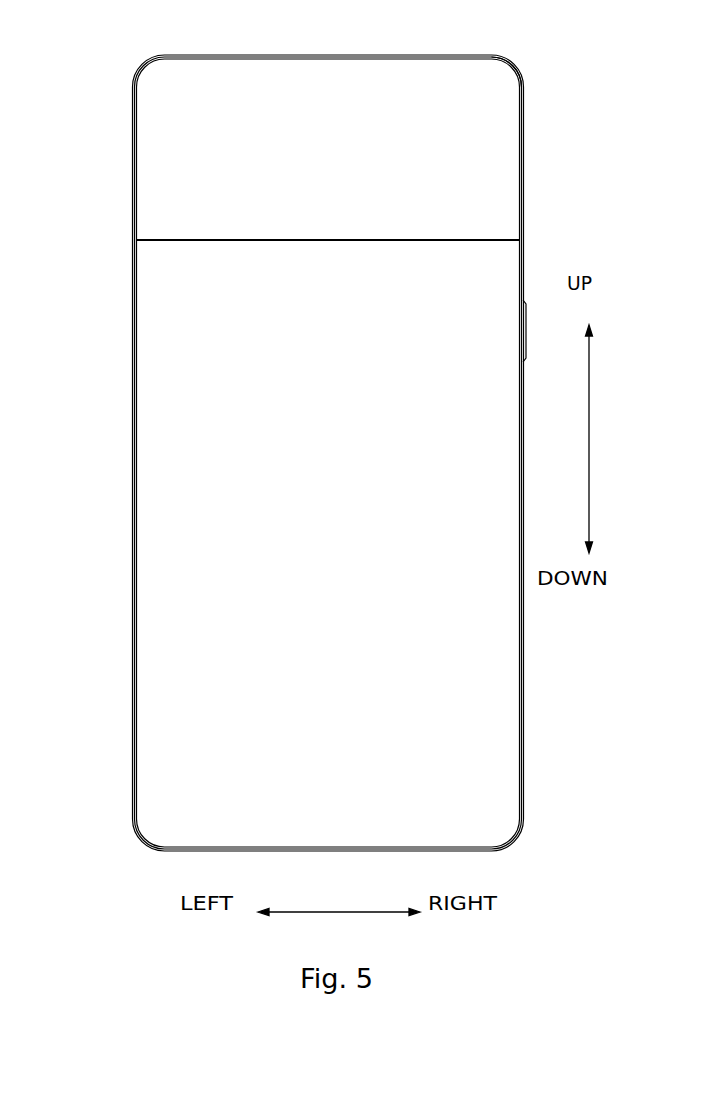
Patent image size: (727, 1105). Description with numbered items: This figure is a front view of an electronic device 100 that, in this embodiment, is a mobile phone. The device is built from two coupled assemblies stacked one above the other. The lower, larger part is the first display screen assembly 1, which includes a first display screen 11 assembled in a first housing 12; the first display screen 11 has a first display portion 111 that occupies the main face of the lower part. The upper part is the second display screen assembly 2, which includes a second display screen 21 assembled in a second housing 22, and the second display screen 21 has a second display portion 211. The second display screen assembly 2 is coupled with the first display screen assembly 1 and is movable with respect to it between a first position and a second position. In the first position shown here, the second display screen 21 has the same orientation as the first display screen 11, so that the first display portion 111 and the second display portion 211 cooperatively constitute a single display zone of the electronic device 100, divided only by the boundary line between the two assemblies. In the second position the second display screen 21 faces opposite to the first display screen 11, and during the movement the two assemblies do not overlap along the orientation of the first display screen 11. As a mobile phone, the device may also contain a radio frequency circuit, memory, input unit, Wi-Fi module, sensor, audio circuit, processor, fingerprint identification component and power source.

The electronic device 100 is at (368, 26).
The first display screen assembly 1 is at (83, 465).
The first display screen 11 is at (163, 443).
The first housing 12 is at (132, 547).
The first display portion 111 is at (175, 352).
The second display screen assembly 2 is at (83, 117).
The second display screen 21 is at (160, 97).
The second housing 22 is at (132, 200).
The second display portion 211 is at (497, 132).